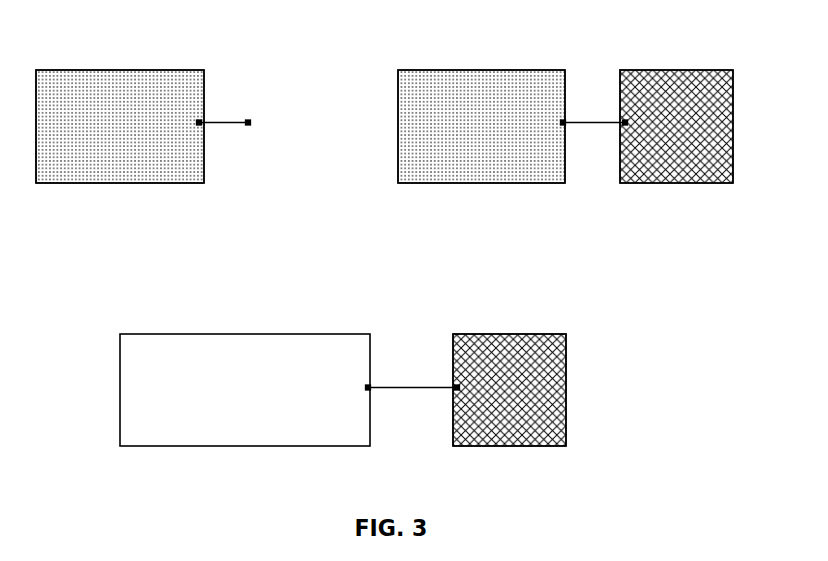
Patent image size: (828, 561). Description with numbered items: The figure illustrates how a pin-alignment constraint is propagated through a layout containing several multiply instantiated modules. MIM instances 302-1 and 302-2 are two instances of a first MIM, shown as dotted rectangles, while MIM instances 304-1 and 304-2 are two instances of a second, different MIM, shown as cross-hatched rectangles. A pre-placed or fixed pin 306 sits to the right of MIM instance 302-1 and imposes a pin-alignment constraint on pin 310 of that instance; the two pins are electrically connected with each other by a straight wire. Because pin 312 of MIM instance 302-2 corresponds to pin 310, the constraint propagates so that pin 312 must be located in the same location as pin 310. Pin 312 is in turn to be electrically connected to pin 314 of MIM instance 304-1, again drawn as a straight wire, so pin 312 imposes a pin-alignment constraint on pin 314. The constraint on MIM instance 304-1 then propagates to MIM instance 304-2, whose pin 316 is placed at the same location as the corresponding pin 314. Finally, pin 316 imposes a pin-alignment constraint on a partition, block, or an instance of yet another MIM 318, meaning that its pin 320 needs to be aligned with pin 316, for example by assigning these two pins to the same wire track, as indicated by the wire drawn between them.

The MIM instance 302-1 is at (120, 103).
The MIM instance 302-2 is at (481, 103).
The MIM instance 304-1 is at (676, 103).
The MIM instance 304-2 is at (509, 366).
The pre-placed or fixed pin 306 is at (259, 123).
The pin 310 is at (190, 123).
The pin 312 is at (552, 123).
The pin 314 is at (634, 125).
The pin 316 is at (468, 388).
The partition, block, or instance of yet another MIM 318 is at (245, 390).
The pin 320 is at (358, 388).